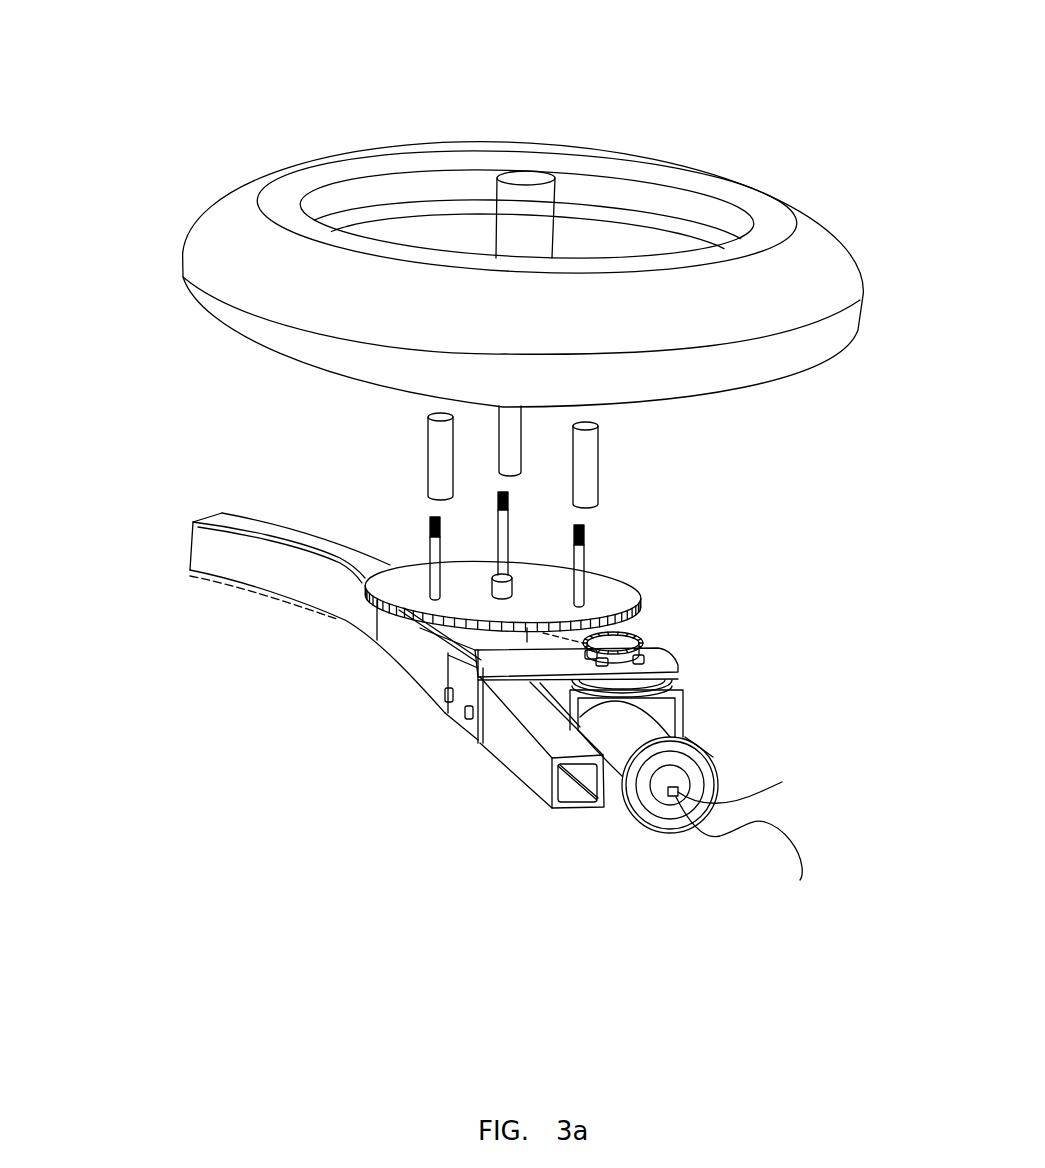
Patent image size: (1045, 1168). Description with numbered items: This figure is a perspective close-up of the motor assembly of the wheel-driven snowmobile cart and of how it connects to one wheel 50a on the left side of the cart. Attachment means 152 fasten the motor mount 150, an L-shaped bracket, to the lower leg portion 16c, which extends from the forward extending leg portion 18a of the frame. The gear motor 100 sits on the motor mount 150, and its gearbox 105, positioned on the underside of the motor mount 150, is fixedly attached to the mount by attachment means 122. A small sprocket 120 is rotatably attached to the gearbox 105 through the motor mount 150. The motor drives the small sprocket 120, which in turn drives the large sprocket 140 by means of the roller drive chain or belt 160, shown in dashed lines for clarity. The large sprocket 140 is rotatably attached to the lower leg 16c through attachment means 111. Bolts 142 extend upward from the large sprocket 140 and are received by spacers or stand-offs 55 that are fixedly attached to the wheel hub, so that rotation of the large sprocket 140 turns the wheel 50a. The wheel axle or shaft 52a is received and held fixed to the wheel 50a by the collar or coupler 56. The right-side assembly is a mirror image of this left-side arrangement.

The wheel 50a is at (313, 152).
The collar over shaft 56 is at (535, 172).
The spacer or stand off 55 is at (598, 463).
The bolts 142 is at (585, 552).
The wheel axle or shaft 52a is at (498, 575).
The large sprocket 140 is at (633, 588).
The roller drive chain or belt 160 is at (647, 617).
The attachment means 122 is at (640, 658).
The small sprocket 120 is at (640, 635).
The motor mount 150 is at (677, 678).
The forward extending leg portion 18a is at (322, 589).
The attachment means 111 is at (498, 640).
The means for attaching motor mount 152 is at (468, 714).
The lower leg portion 16c is at (535, 792).
The gear motor 100 is at (662, 833).
The gearbox 105 is at (683, 712).